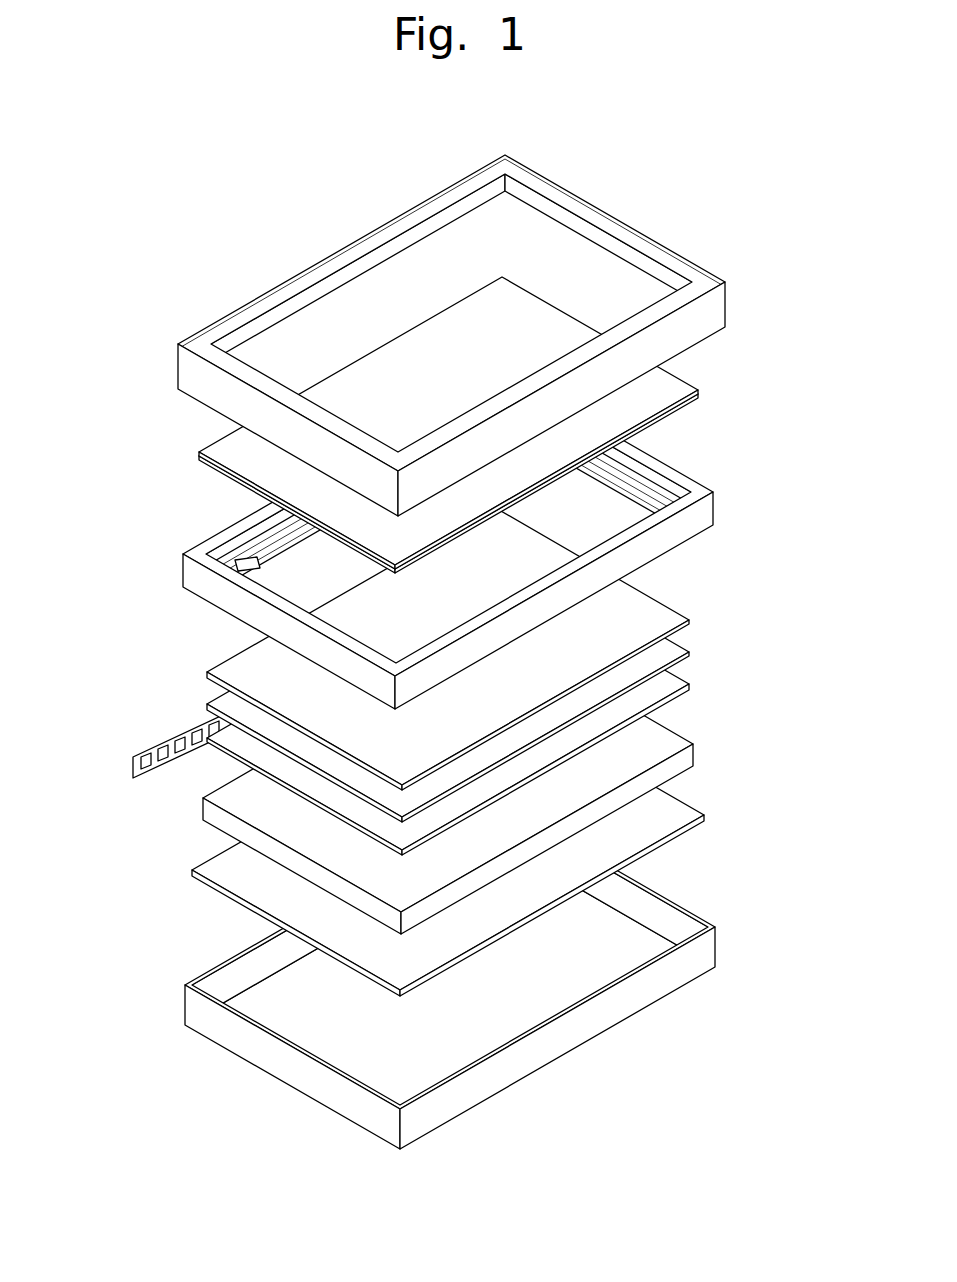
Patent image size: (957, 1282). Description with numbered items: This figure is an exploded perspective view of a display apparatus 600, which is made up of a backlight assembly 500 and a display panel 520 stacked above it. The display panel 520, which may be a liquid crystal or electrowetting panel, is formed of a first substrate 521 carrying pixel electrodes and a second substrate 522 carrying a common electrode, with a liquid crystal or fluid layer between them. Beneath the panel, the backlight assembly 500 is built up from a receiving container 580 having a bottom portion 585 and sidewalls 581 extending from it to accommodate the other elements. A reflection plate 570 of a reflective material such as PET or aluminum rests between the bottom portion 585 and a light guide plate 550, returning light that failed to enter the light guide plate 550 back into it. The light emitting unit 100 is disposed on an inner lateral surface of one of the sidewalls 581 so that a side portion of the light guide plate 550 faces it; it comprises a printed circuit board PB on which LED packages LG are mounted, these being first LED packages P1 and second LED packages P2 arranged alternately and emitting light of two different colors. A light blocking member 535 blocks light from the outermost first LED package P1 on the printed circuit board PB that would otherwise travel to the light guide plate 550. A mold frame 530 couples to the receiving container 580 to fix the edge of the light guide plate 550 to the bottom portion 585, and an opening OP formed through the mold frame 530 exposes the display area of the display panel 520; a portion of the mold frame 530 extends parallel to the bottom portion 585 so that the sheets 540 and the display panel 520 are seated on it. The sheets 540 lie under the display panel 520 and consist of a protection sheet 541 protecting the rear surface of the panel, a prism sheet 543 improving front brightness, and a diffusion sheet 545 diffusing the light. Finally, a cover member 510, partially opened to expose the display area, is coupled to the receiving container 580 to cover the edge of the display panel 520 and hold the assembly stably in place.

The display apparatus 600 is at (612, 192).
The cover member 510 is at (709, 312).
The display panel 520 is at (778, 358).
The second substrate 522 is at (672, 386).
The first substrate 521 is at (694, 404).
The opening OP is at (613, 500).
The mold frame 530 is at (713, 514).
The light blocking member 535 is at (246, 556).
The sheets 540 is at (764, 600).
The protection sheet 541 is at (673, 616).
The prism sheet 543 is at (673, 649).
The diffusion sheet 545 is at (673, 684).
The light guide plate 550 is at (686, 752).
The reflection plate 570 is at (675, 813).
The receiving container 580 is at (633, 938).
The sidewalls 581 is at (223, 983).
The bottom portion 585 is at (294, 1027).
The backlight assembly 500 is at (806, 505).
The light emitting unit 100 is at (178, 605).
The printed circuit board PB is at (209, 720).
The LED packages LG is at (168, 655).
The first LED packages P1 is at (140, 758).
The second LED packages P2 is at (163, 745).